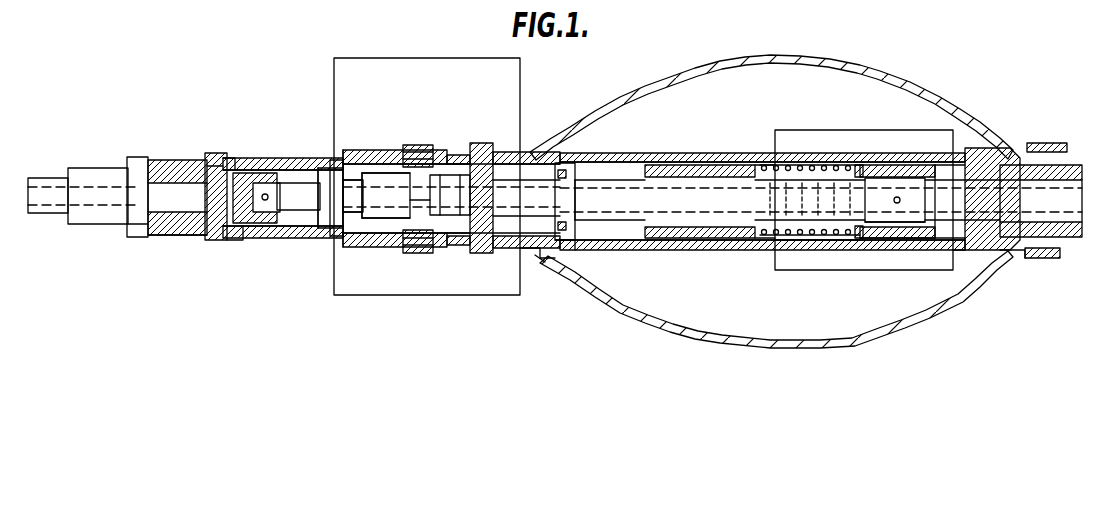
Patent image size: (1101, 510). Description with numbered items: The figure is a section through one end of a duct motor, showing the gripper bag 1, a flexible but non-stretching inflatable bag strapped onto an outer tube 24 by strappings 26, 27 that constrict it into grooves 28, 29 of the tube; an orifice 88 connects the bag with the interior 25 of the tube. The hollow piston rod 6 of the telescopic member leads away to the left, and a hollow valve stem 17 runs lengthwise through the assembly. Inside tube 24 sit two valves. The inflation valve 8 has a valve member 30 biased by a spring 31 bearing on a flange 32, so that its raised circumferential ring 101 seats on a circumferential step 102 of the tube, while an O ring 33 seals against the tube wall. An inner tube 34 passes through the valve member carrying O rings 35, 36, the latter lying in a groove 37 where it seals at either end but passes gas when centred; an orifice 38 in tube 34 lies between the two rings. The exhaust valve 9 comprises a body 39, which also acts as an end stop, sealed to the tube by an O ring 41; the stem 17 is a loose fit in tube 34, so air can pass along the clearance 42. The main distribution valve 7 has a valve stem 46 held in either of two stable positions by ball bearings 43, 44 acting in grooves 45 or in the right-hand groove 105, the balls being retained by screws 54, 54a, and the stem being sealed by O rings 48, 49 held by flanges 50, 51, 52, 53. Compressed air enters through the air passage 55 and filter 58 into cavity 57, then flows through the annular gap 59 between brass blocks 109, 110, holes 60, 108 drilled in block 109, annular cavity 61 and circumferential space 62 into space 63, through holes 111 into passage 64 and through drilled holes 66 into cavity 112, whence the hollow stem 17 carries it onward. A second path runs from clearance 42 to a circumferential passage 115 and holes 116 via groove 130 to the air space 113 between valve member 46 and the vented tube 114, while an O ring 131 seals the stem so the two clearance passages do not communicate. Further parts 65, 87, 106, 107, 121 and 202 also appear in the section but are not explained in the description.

The gripper bag 1 is at (778, 58).
The piston rod 6 is at (40, 180).
The main distribution valve 7 is at (430, 58).
The inflation valve 8 is at (785, 165).
The exhaust valve 9 is at (1000, 153).
The valve stem 17 is at (603, 180).
The outer tube 24 is at (671, 155).
The interior of tube 25 is at (957, 247).
The strapping 26 is at (1032, 263).
The strapping 27 is at (530, 152).
The groove 28 is at (1057, 258).
The groove 29 is at (562, 152).
The valve member 30 is at (780, 148).
The spring 31 is at (792, 150).
The flange 32 is at (813, 150).
The O ring 33 is at (863, 167).
The inner tube 34 is at (688, 178).
The O ring 35 is at (800, 270).
The O ring 36 is at (918, 250).
The groove 37 is at (913, 175).
The orifice 38 is at (893, 250).
The valve body 39 is at (1052, 168).
The O ring 41 is at (1013, 150).
The clearance 42 is at (683, 248).
The ball bearing 43 is at (418, 165).
The ball bearing 44 is at (408, 247).
The grooves 45 is at (404, 185).
The valve stem 46 is at (382, 190).
The O ring 48 is at (347, 253).
The O ring 49 is at (540, 258).
The flange 50 is at (325, 237).
The flange 51 is at (350, 253).
The flange 52 is at (453, 253).
The flange 53 is at (540, 263).
The screw 54 is at (430, 188).
The screw 54a is at (422, 247).
The air passage 55 is at (117, 190).
The cavity 57 is at (170, 190).
The filter 58 is at (146, 188).
The annular gap 59 is at (228, 170).
The hole 60 is at (250, 170).
The annular cavity 61 is at (279, 160).
The circumferential space 62 is at (317, 158).
The circumferential space 63 is at (332, 158).
The circumferential passage 64 is at (335, 156).
The plunger 65 is at (253, 240).
The drilled holes 66 is at (233, 235).
The valve port 87 is at (388, 247).
The orifice 88 is at (937, 157).
The raised circumferential ring 101 is at (857, 250).
The circumferential step 102 is at (880, 253).
The groove 105 is at (449, 160).
The nut lower wall 106 is at (167, 232).
The sleeve end face 107 is at (140, 213).
The hole 108 is at (232, 243).
The brass block 109 is at (267, 243).
The brass block 110 is at (322, 237).
The holes 111 is at (370, 175).
The cavity 112 is at (222, 170).
The air space 113 is at (413, 253).
The tube 114 is at (363, 255).
The circumferential passage 115 is at (450, 247).
The holes 116 is at (474, 162).
The coupling step 121 is at (553, 250).
The groove 130 is at (615, 243).
The O ring 131 is at (601, 193).
The piston sleeve 202 is at (887, 173).